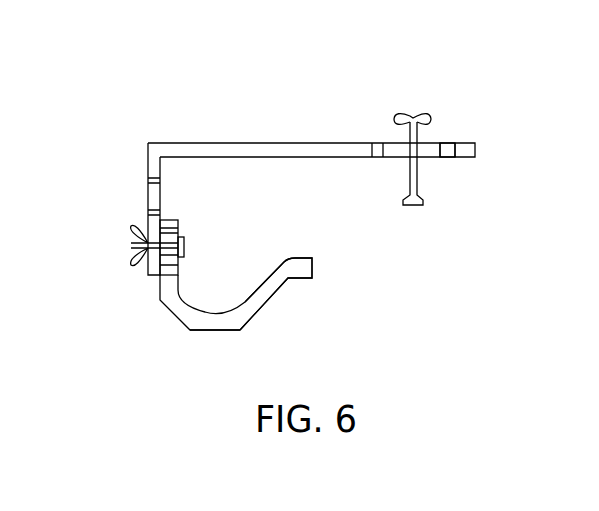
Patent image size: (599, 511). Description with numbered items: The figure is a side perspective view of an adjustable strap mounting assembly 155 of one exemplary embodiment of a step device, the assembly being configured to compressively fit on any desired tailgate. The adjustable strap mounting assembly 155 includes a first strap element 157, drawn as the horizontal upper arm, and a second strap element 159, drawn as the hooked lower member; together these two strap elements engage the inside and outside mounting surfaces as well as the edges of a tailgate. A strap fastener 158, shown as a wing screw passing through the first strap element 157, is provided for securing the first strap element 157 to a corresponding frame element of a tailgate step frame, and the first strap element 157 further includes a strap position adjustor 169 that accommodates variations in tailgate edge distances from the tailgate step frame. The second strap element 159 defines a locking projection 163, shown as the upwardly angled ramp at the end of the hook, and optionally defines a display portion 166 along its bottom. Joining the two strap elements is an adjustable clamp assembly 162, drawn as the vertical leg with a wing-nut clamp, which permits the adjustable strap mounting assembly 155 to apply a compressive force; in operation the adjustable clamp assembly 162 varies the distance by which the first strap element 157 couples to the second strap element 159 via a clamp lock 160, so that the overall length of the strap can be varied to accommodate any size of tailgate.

The adjustable strap mounting assembly 155 is at (190, 128).
The first strap element 157 is at (284, 150).
The strap fastener 158 is at (411, 109).
The second strap element 159 is at (160, 296).
The clamp lock 160 is at (192, 237).
The adjustable clamp assembly 162 is at (118, 177).
The locking projection 163 is at (290, 287).
The display portion 166 is at (213, 332).
The strap position adjustor 169 is at (448, 152).